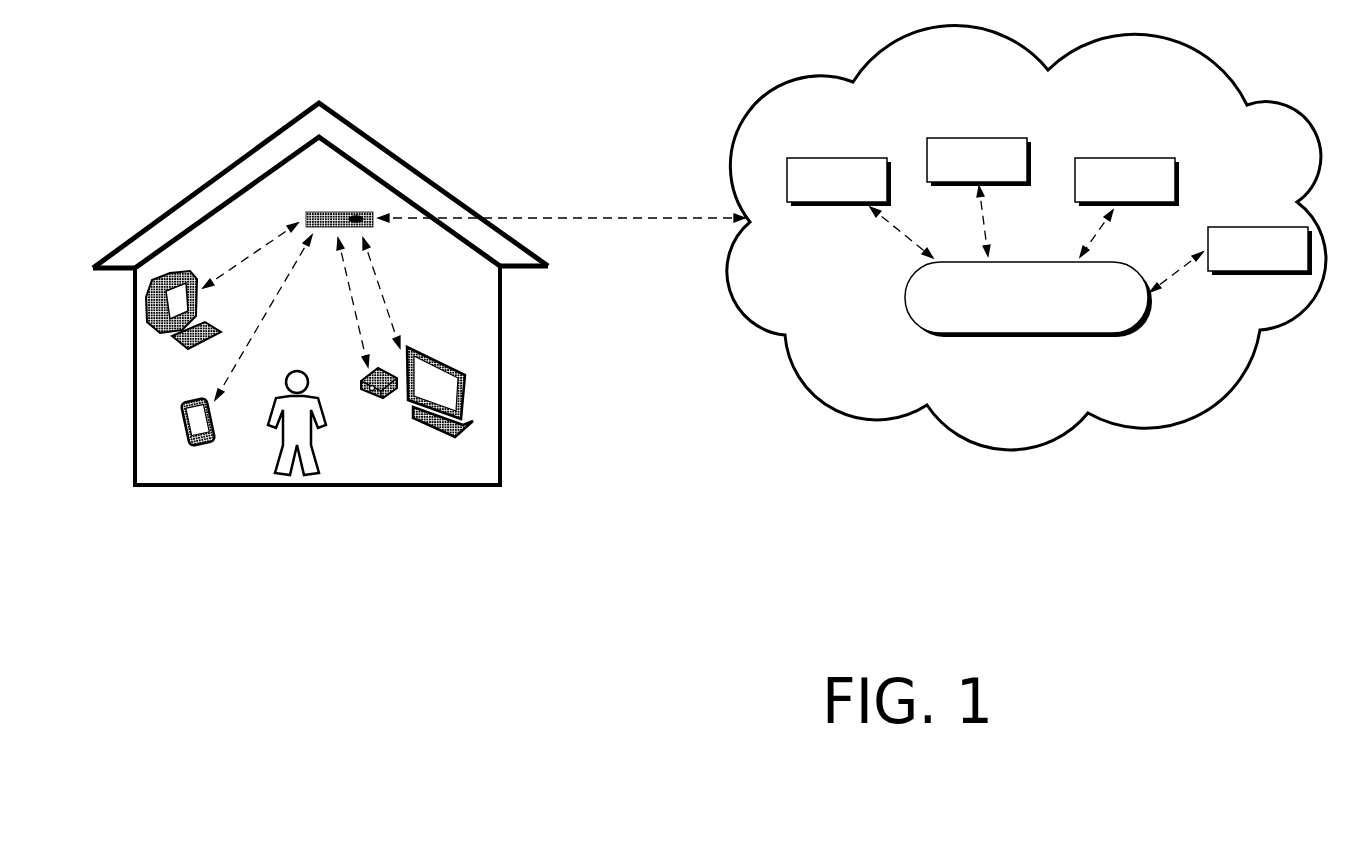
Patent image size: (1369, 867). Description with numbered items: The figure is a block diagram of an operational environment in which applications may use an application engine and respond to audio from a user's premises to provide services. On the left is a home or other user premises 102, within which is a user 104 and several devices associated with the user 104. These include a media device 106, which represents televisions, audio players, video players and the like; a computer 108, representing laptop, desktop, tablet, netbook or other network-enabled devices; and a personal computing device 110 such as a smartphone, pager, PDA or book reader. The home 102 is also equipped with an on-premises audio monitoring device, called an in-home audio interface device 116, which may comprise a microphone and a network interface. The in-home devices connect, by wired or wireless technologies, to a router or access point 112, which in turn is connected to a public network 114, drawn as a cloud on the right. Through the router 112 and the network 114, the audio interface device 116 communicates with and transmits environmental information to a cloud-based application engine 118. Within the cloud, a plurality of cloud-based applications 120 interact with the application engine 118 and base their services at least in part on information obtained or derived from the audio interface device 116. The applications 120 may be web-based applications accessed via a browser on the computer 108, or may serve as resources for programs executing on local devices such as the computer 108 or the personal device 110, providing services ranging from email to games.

The user premises 102 is at (328, 120).
The user 104 is at (308, 438).
The media device 106 is at (430, 351).
The computer 108 is at (145, 306).
The personal computing device 110 is at (183, 415).
The router or access point 112 is at (335, 213).
The public network 114 is at (778, 110).
The audio interface device 116 is at (366, 374).
The application engine 118 is at (920, 313).
The cloud-based applications 120 is at (862, 162).